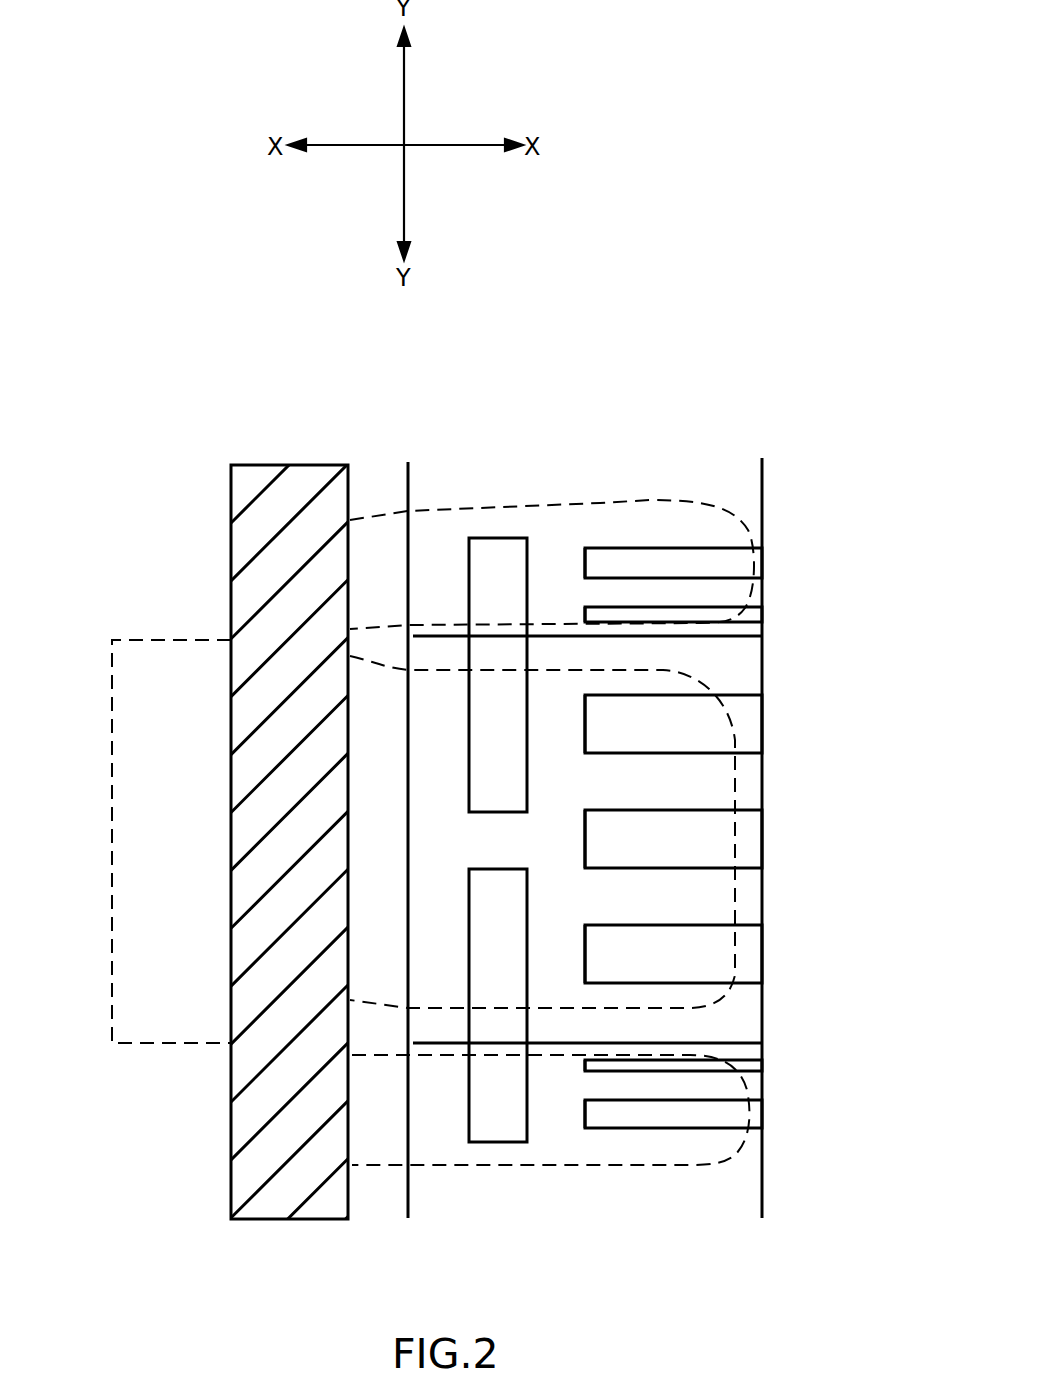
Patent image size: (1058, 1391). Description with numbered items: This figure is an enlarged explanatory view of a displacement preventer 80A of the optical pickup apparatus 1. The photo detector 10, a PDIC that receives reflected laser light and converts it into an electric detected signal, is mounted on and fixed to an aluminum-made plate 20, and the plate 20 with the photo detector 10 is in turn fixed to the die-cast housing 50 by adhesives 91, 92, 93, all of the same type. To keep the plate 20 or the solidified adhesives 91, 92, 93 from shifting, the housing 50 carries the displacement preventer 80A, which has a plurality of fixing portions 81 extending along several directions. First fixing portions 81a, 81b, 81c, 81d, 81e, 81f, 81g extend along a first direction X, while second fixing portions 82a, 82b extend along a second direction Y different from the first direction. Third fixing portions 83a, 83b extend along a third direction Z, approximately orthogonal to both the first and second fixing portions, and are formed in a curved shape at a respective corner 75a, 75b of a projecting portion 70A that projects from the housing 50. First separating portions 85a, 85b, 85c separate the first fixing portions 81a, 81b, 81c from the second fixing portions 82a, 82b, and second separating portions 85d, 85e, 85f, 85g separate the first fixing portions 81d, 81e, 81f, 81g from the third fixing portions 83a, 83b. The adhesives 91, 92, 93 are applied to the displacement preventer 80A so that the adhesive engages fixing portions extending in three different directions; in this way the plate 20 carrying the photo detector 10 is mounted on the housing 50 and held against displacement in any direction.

The optical pickup apparatus 1 is at (726, 286).
The photo detector 10 is at (112, 834).
The plate 20 is at (297, 465).
The housing 50 is at (770, 486).
The projecting portion 70A is at (718, 1017).
The displacement preventer 80A is at (772, 1025).
The corner 75a is at (735, 634).
The corner 75b is at (767, 1048).
The fixing portion 81 is at (747, 827).
The first fixing portion 81a is at (747, 732).
The first fixing portion 81b is at (748, 845).
The first fixing portion 81c is at (747, 960).
The first fixing portion 81d is at (710, 623).
The first fixing portion 81e is at (755, 562).
The first fixing portion 81f is at (748, 1065).
The first fixing portion 81g is at (753, 1117).
The second fixing portion 82a is at (320, 602).
The second fixing portion 82b is at (325, 1071).
The third fixing portion 83a is at (490, 553).
The third fixing portion 83b is at (492, 1117).
The first separating portion 85a is at (550, 727).
The first separating portion 85b is at (550, 822).
The first separating portion 85c is at (550, 940).
The second separating portion 85d is at (545, 613).
The second separating portion 85e is at (565, 558).
The second separating portion 85f is at (553, 1068).
The second separating portion 85g is at (572, 1125).
The adhesive 91 is at (727, 675).
The adhesive 92 is at (656, 500).
The adhesive 93 is at (623, 1167).